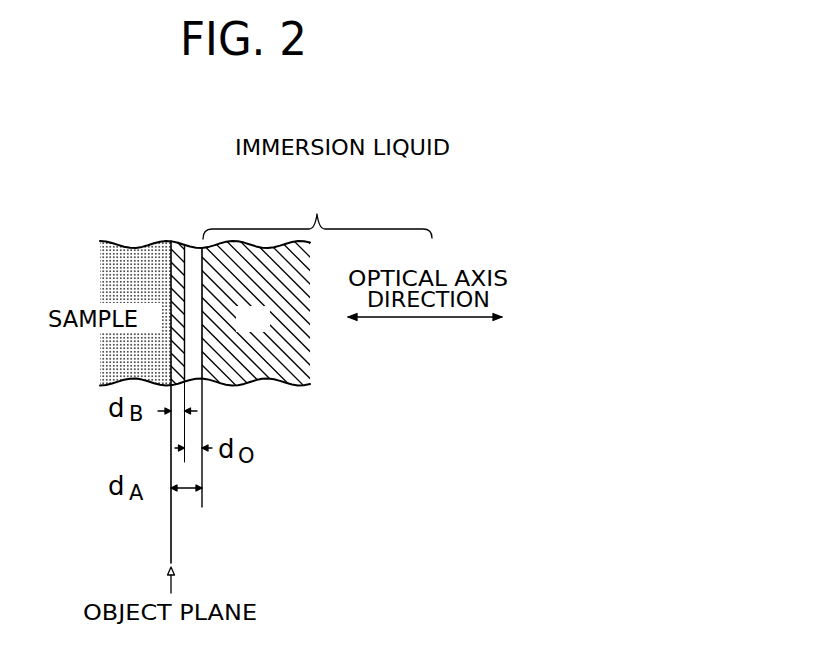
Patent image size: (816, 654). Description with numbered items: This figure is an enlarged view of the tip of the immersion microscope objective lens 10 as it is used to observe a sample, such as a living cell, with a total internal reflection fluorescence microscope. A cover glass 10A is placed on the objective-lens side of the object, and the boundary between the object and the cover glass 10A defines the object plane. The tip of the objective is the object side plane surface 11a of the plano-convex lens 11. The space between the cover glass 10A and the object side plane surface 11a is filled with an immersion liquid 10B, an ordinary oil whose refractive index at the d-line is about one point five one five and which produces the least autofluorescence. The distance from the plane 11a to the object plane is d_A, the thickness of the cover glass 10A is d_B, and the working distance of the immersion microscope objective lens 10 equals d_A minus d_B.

The immersion microscope objective lens 10 is at (317, 211).
The cover glass 10A is at (177, 243).
The immersion liquid 10B is at (194, 244).
The plano-convex lens 11 is at (252, 314).
The object side plane surface 11a is at (202, 521).